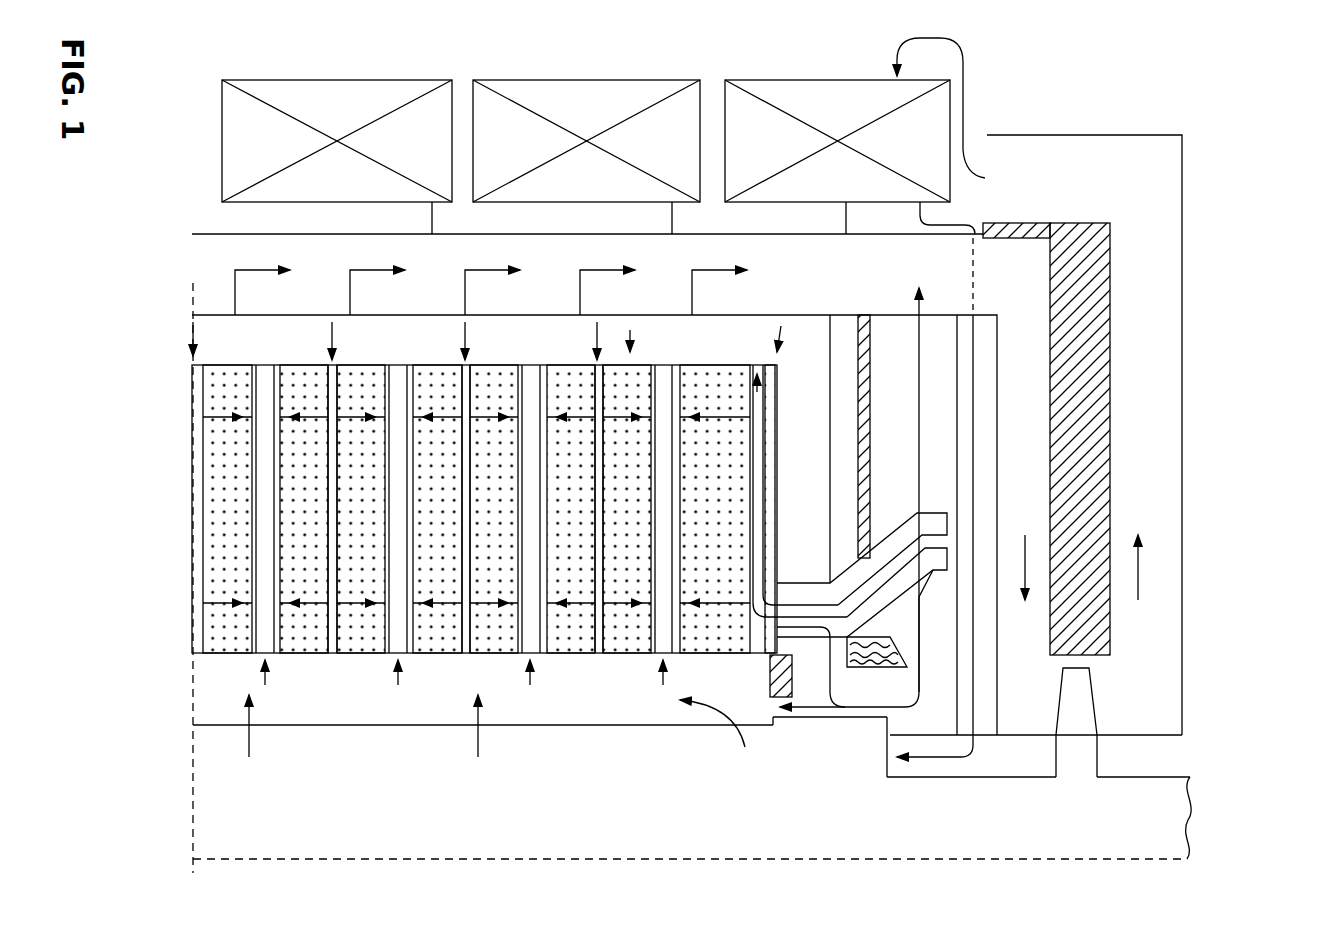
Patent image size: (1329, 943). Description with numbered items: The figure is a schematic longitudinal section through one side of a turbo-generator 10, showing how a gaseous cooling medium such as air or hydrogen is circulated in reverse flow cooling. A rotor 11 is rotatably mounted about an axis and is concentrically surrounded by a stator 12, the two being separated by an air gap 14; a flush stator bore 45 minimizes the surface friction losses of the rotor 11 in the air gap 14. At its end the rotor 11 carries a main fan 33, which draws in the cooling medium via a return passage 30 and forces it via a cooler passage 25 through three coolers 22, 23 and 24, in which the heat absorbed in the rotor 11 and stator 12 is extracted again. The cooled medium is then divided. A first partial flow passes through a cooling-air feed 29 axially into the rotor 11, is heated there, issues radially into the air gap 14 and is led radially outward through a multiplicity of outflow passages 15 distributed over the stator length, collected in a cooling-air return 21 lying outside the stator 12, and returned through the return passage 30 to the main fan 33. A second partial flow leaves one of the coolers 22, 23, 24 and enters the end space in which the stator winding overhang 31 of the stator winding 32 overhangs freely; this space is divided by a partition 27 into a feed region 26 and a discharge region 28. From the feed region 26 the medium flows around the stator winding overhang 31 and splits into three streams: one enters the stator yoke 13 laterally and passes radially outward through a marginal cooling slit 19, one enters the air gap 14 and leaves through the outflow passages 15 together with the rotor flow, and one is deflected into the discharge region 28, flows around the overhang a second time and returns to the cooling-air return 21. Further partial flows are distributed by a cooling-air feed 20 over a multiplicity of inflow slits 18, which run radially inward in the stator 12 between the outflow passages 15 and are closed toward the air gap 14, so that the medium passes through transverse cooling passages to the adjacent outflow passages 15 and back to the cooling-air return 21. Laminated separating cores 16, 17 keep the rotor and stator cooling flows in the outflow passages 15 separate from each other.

The turbo-generator 10 is at (1311, 211).
The rotor 11 is at (583, 841).
The stator 12 is at (158, 505).
The stator yoke 13 is at (212, 523).
The air gap 14 is at (220, 690).
The outflow passages 15 is at (263, 450).
The laminated separating core 16 is at (258, 655).
The laminated separating core 17 is at (277, 655).
The inflow slits 18 is at (464, 655).
The marginal cooling slit 19 is at (757, 366).
The cooling-air feed 20 is at (225, 330).
The cooling-air return 21 is at (215, 258).
The cooler 22 is at (325, 88).
The cooler 23 is at (578, 88).
The cooler 24 is at (805, 92).
The cooler passage 25 is at (1155, 168).
The feed region 26 is at (842, 380).
The partition 27 is at (870, 445).
The discharge region 28 is at (935, 468).
The cooling-air feed 29 is at (983, 513).
The return passage 30 is at (1040, 573).
The stator winding overhang 31 is at (920, 597).
The stator winding 32 is at (807, 633).
The main fan 33 is at (1077, 701).
The flush stator bore 45 is at (220, 655).